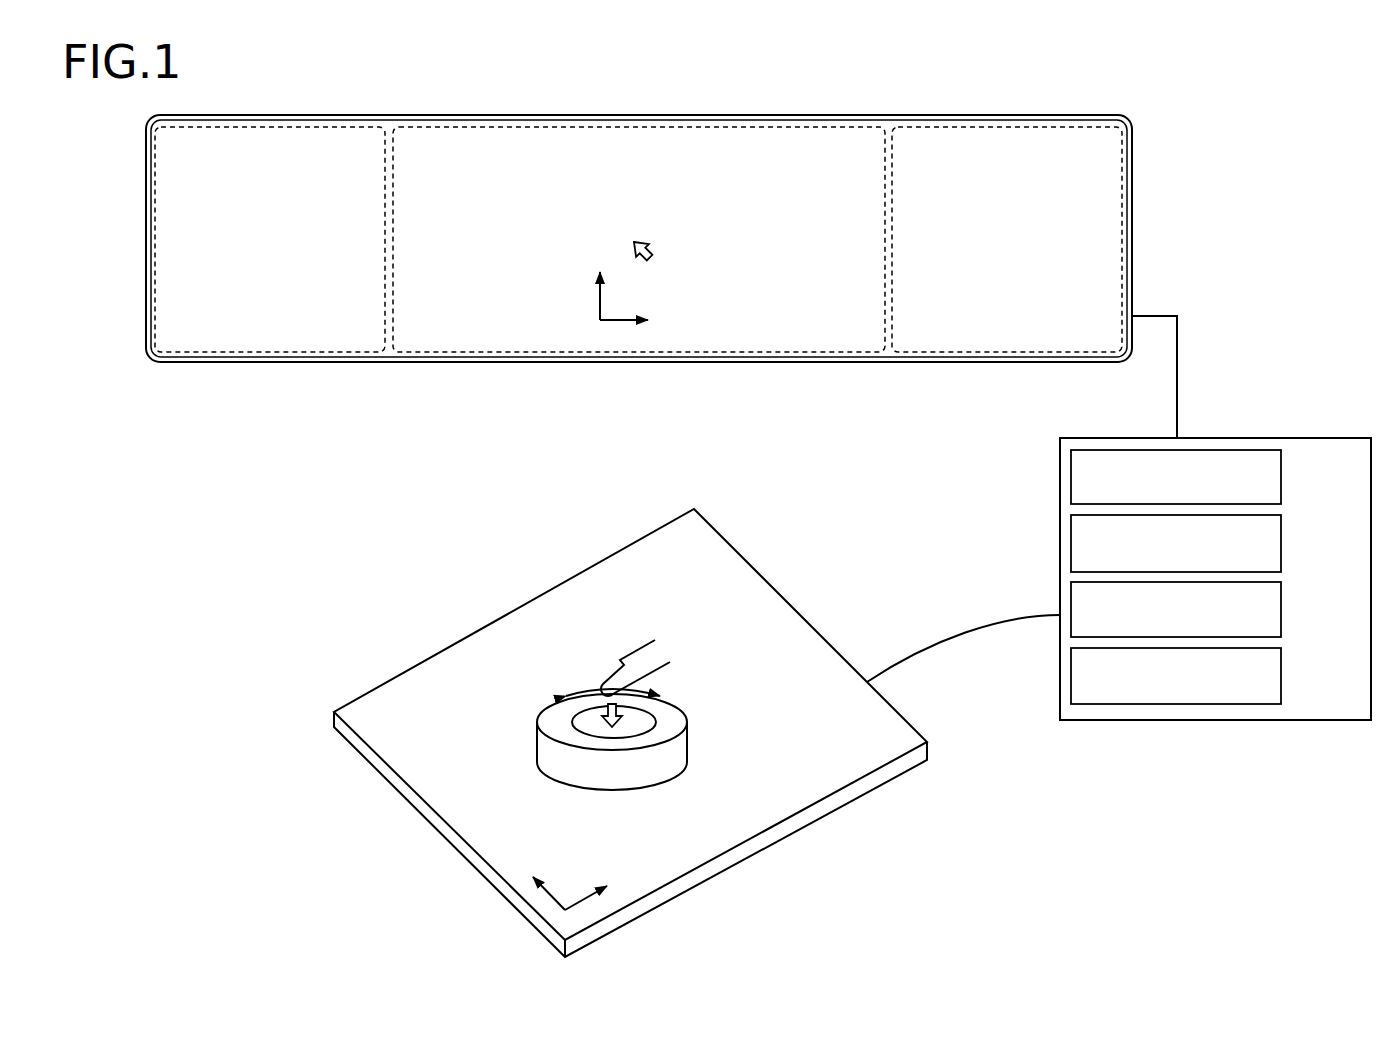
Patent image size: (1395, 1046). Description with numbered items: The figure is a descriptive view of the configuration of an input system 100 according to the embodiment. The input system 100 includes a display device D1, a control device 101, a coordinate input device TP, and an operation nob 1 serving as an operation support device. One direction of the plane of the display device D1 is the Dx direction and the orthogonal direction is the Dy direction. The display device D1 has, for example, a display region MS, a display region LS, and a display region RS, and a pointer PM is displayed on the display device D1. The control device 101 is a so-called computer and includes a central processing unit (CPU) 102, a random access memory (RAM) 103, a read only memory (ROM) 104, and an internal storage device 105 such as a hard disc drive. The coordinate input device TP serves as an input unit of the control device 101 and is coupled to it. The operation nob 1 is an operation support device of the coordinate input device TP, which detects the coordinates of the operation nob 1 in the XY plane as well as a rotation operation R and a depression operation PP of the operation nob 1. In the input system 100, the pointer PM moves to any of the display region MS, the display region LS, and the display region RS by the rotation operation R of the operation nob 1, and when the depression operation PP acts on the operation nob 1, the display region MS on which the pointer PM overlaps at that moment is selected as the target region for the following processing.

The input system 100 is at (1226, 103).
The display device D1 is at (1094, 115).
The display region LS is at (268, 148).
The display region MS is at (637, 148).
The display region RS is at (1005, 148).
The pointer PM is at (640, 238).
The control device 101 is at (1300, 438).
The central processing unit (CPU) 102 is at (1282, 474).
The random access memory (RAM) 103 is at (1282, 540).
The read only memory (ROM) 104 is at (1282, 606).
The internal storage device 105 is at (1282, 673).
The coordinate input device TP is at (552, 618).
The operation nob 1 is at (688, 748).
The depression operation PP is at (602, 708).
The rotation operation R is at (581, 690).